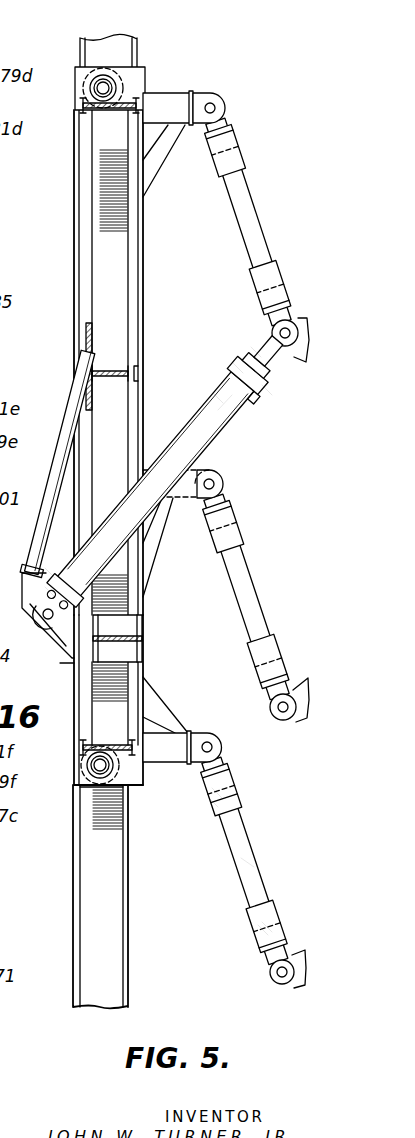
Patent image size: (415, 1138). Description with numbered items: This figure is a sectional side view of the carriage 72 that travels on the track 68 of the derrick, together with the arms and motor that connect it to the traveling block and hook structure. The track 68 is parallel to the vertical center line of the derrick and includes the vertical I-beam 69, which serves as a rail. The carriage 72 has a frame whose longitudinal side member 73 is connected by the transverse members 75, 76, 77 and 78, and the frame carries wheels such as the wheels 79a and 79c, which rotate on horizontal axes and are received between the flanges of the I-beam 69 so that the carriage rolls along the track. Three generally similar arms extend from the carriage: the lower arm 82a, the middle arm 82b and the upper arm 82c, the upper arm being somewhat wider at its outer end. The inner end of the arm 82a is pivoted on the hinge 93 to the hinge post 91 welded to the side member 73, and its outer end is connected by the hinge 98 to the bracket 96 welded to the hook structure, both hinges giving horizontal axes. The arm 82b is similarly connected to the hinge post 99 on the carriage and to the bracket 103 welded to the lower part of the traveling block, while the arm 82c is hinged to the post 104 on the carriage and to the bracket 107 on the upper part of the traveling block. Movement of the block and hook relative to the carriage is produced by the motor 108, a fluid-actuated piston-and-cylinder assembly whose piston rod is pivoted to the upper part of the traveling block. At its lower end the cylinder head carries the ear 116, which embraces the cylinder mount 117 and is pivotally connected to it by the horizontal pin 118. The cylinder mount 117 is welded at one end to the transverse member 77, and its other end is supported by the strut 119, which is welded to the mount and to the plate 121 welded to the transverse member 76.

The track 68 is at (66, 882).
The I-beam 69 is at (117, 968).
The carriage 72 is at (72, 252).
The side member 73 is at (82, 708).
The transverse member 75 is at (108, 112).
The transverse member 76 is at (112, 370).
The transverse member 77 is at (142, 633).
The transverse member 78 is at (83, 742).
The wheel 79a is at (110, 67).
The wheel 79c is at (99, 788).
The arm 82a is at (242, 844).
The arm 82b is at (237, 596).
The upper arm 82c is at (253, 182).
The hinge post 91 is at (175, 764).
The hinge 93 is at (214, 747).
The bracket 96 is at (288, 982).
The hinge 98 is at (271, 972).
The hinge post 99 is at (192, 500).
The bracket 103 is at (302, 722).
The post 104 is at (157, 100).
The bracket 107 is at (300, 357).
The motor 108 is at (250, 443).
The ear 116 is at (45, 623).
The cylinder mount 117 is at (63, 652).
The pin 118 is at (43, 612).
The strut 119 is at (60, 461).
The plate 121 is at (85, 333).